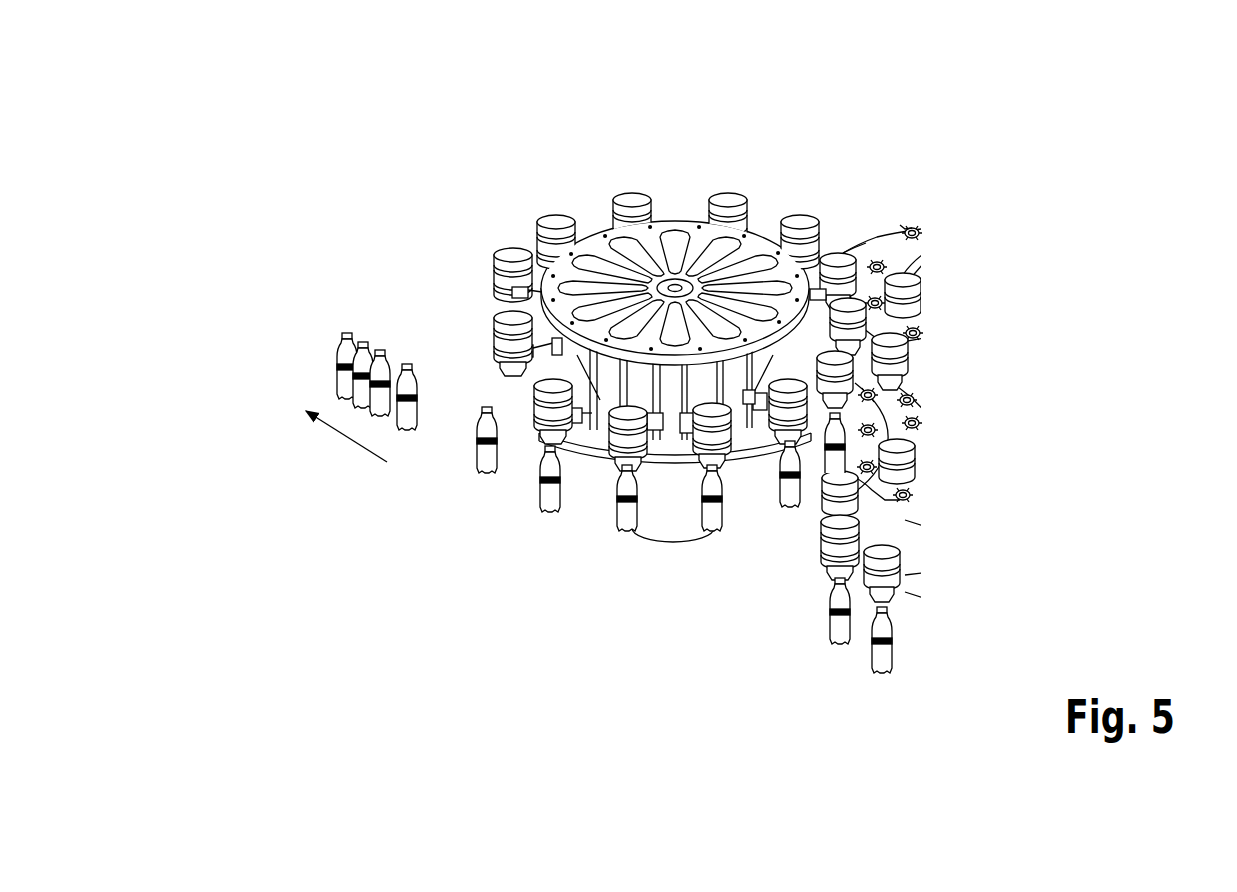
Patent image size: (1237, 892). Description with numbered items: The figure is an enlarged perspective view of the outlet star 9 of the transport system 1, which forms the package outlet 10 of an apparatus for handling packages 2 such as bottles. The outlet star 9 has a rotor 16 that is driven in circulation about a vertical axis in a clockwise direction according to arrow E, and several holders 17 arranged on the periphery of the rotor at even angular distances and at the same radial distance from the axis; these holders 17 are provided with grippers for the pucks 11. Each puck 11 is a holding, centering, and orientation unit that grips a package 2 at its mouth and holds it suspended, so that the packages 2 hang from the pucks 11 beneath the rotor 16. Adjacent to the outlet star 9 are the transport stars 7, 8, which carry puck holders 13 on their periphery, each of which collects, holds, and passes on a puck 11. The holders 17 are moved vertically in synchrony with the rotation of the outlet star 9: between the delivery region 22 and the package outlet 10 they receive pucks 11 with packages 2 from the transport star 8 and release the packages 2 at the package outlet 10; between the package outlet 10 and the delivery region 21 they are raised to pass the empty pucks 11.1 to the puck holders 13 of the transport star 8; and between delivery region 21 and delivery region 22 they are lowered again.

The transport system 1 is at (666, 409).
The package 2 is at (480, 465).
The transport star 7 is at (976, 482).
The transport star 8 is at (946, 252).
The outlet star 9 is at (604, 220).
The package outlet 10 is at (500, 515).
The puck 11 is at (726, 198).
The empty puck 11.1 is at (497, 250).
The puck holder 13 is at (905, 226).
The rotor 16 is at (679, 226).
The holder 17 is at (762, 440).
The delivery region 21 is at (852, 238).
The delivery region 22 is at (884, 316).
The arrow (direction of rotation of the outlet star) E is at (550, 182).